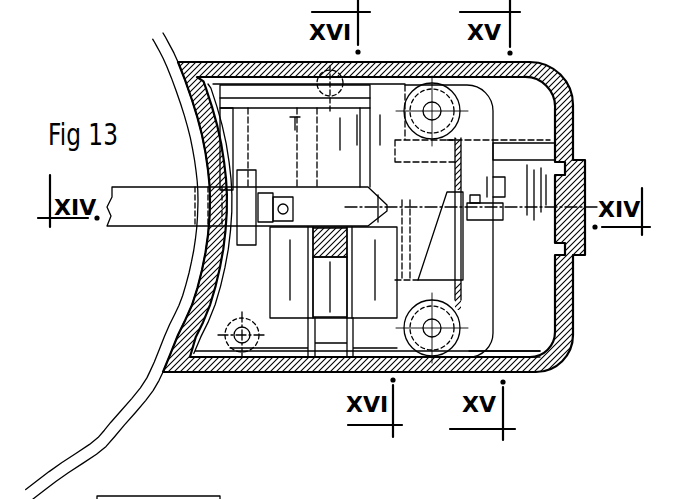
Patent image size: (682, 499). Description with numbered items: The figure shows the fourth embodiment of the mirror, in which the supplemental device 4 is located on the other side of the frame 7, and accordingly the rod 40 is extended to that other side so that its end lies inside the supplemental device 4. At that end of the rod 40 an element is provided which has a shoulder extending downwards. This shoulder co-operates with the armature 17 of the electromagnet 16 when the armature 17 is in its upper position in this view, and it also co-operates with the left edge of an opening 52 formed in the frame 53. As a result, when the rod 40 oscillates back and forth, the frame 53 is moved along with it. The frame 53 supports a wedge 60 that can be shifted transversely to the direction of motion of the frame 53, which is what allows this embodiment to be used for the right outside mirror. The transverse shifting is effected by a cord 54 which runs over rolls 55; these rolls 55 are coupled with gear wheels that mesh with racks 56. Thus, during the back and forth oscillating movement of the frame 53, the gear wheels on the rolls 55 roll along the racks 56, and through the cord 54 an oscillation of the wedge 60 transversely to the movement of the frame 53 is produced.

The supplemental device 4 is at (577, 160).
The frame 7 is at (138, 398).
The electromagnet 16 is at (288, 308).
The armature 17 is at (340, 348).
The rod 40 is at (170, 197).
The opening 52 is at (440, 82).
The frame 53 is at (487, 113).
The cord 54 is at (455, 173).
The rolls 55 is at (428, 355).
The racks 56 is at (533, 148).
The wedge 60 is at (482, 222).